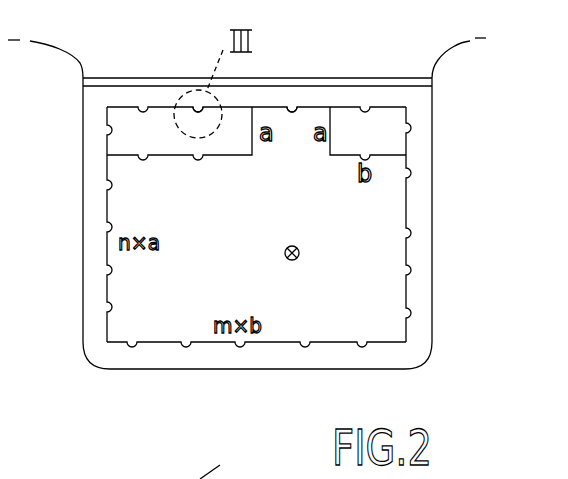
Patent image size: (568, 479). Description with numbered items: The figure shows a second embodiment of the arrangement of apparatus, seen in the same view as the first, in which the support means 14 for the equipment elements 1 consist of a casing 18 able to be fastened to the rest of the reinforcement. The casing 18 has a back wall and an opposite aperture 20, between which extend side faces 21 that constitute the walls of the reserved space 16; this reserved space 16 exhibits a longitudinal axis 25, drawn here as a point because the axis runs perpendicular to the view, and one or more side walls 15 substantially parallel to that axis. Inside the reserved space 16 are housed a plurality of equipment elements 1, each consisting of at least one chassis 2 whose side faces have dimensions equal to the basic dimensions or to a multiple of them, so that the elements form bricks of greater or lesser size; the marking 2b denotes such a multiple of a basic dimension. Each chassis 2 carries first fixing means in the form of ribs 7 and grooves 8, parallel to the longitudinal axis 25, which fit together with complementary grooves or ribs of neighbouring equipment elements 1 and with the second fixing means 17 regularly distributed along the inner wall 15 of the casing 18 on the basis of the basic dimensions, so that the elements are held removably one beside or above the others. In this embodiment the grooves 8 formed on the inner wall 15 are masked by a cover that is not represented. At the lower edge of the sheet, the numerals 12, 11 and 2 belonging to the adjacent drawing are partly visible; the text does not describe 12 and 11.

In FIG. 2, the equipment element 1 is at (162, 137).
In FIG. 2, the double element width 2b is at (179, 149).
In FIG. 2, the rib 7 is at (292, 116).
In FIG. 2, the groove 8 is at (414, 128).
In FIG. 2, the support means 14 is at (98, 165).
In FIG. 2, the side wall 15 is at (315, 103).
In FIG. 2, the reserved space 16 is at (160, 222).
In FIG. 2, the second fixing means 17 is at (200, 122).
In FIG. 2, the casing 18 is at (420, 292).
In FIG. 2, the aperture 20 is at (209, 280).
In FIG. 2, the side face 21 is at (154, 99).
In FIG. 2, the longitudinal axis 25 is at (284, 252).
In FIG. 1, the component 12 is at (40, 478).
In FIG. 1, the component 11 is at (88, 478).
In FIG. 1, the chassis 2 is at (128, 478).